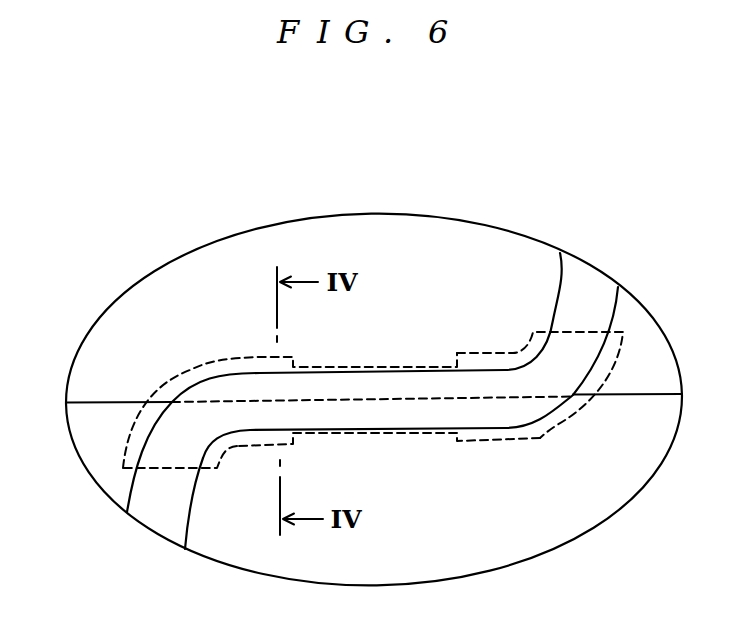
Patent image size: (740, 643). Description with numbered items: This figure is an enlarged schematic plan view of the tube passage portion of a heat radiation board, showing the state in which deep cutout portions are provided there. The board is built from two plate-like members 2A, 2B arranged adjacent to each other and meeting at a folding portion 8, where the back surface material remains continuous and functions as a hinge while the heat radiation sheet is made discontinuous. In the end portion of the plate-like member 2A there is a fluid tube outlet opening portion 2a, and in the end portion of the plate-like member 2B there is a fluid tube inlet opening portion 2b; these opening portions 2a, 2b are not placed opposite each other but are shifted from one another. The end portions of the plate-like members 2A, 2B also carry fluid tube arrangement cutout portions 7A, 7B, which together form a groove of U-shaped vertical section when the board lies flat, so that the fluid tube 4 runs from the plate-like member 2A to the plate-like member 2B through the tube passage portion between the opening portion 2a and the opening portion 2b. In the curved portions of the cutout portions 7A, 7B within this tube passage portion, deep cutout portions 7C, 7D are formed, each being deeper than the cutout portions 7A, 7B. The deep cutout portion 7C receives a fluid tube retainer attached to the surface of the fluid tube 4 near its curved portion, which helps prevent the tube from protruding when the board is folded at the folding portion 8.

The plate-like member 2A is at (372, 306).
The plate-like member 2B is at (375, 492).
The fluid tube outlet opening portion 2a is at (577, 328).
The fluid tube inlet opening portion 2b is at (168, 469).
The fluid tube 4 is at (162, 507).
The fluid tube arrangement cutout portion 7A is at (218, 386).
The fluid tube arrangement cutout portion 7B is at (533, 408).
The deep cutout portion 7C is at (258, 357).
The deep cutout portion 7D is at (495, 440).
The folding portion 8 is at (110, 402).